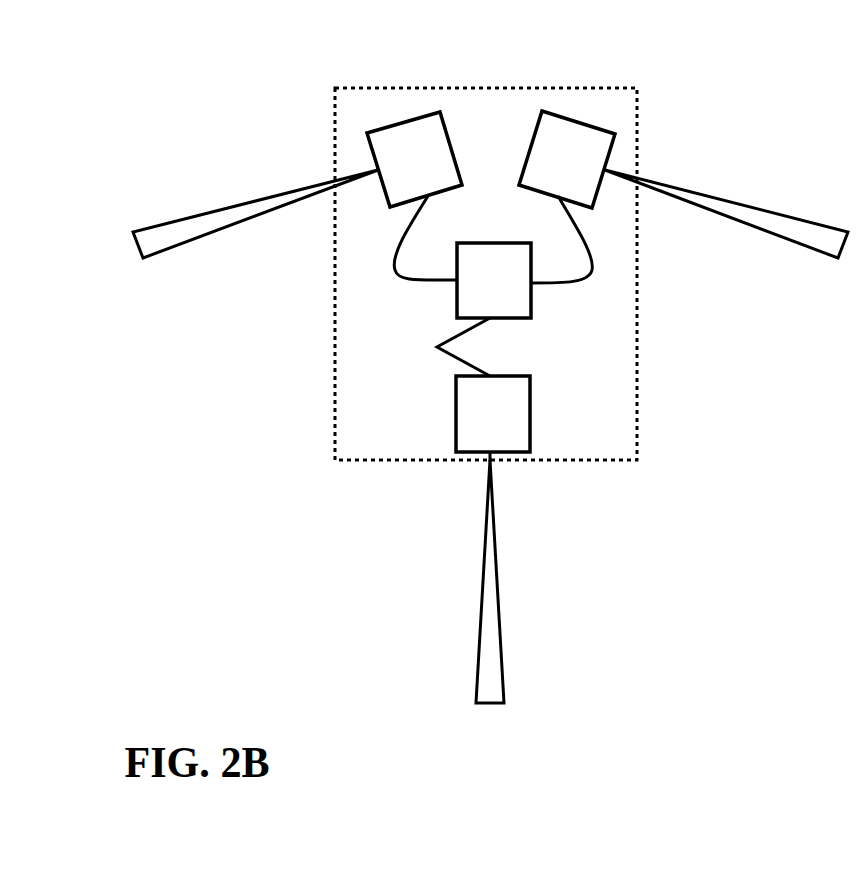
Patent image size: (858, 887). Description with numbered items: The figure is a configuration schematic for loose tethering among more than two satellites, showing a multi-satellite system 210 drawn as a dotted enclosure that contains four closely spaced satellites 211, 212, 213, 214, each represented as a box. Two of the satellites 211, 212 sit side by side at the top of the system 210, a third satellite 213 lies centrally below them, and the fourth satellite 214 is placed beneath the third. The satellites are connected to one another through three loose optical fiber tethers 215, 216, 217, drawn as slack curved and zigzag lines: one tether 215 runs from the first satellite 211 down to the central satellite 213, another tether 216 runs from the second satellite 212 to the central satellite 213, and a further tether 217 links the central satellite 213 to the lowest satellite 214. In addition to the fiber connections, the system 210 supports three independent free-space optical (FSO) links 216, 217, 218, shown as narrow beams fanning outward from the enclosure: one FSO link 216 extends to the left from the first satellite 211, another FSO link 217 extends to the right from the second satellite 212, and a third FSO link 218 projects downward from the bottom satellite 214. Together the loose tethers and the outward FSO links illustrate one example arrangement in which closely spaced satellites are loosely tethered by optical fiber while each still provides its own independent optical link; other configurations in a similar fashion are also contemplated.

The multi-satellite system 210 is at (476, 86).
The satellite 211 is at (405, 116).
The satellite 212 is at (578, 119).
The satellite 213 is at (518, 326).
The satellite 214 is at (538, 417).
The loose optical fiber tether 215 is at (397, 281).
The loose optical fiber tether / FSO link 216 is at (253, 197).
The loose optical fiber tether / FSO link 217 is at (772, 204).
The FSO link 218 is at (477, 600).